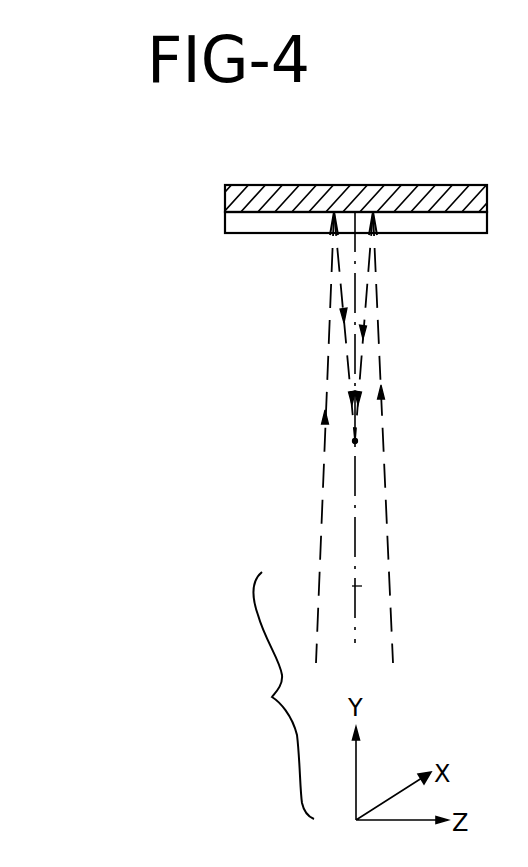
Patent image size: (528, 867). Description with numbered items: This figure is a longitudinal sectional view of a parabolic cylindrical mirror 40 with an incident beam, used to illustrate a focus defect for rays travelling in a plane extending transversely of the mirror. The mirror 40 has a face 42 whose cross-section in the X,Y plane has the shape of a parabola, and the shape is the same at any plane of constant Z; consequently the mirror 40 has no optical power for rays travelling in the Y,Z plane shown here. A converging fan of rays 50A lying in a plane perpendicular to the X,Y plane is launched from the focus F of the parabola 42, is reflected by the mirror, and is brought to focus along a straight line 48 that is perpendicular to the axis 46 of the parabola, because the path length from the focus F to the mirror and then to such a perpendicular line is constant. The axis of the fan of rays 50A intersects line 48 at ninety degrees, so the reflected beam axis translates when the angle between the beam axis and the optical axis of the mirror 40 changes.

The parabolic cylindrical mirror 40 is at (232, 188).
The face 42 is at (236, 227).
The axis of the parabola 46 is at (357, 502).
The line perpendicular to the axis of the parabola 48 is at (355, 442).
The fan of rays 50A is at (385, 530).
The focus of the parabola F is at (357, 594).